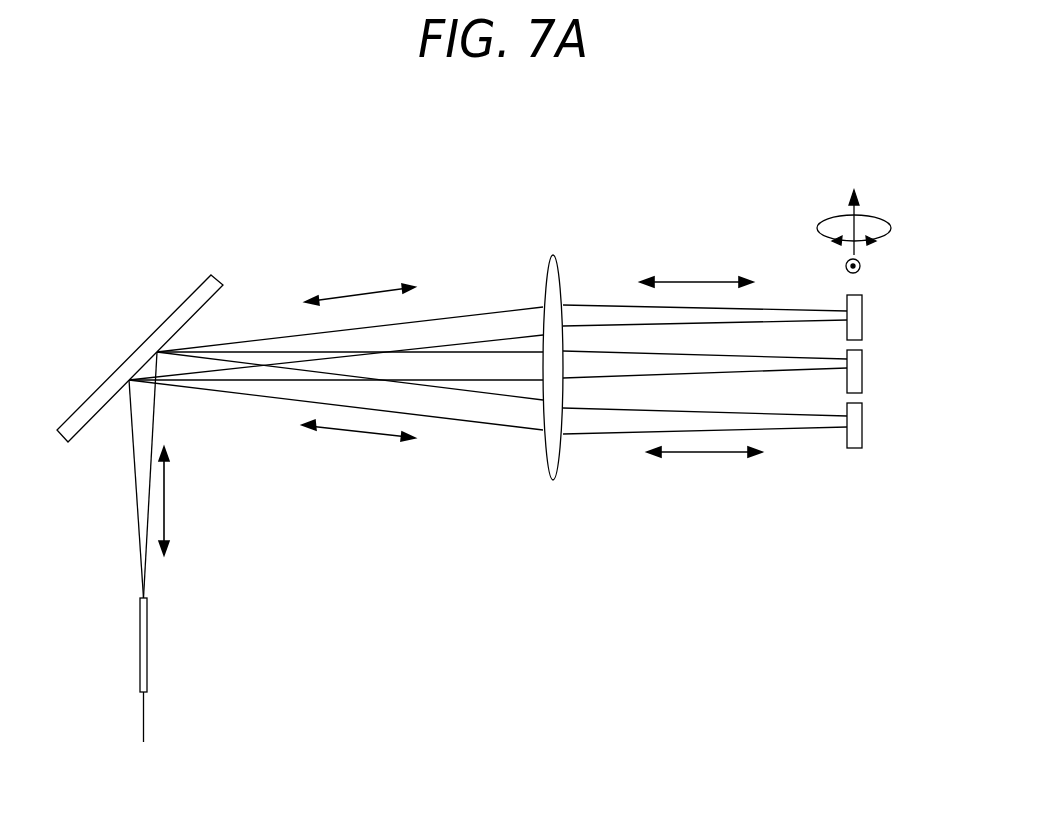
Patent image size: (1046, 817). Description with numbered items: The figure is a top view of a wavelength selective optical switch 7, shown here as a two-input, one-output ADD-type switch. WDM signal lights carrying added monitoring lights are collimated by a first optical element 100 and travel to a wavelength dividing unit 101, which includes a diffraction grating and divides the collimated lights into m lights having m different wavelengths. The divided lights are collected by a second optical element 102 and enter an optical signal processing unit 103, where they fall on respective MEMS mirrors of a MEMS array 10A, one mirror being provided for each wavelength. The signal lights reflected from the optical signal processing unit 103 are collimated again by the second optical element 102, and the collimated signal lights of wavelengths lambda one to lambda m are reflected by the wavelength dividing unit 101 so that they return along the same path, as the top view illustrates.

The wavelength selective optical switch 7 is at (602, 188).
The first optical element 100 is at (143, 623).
The wavelength dividing unit 101 is at (200, 289).
The second optical element 102 is at (558, 292).
The optical signal processing unit 103 is at (870, 288).
The MEMS array 10A is at (856, 449).